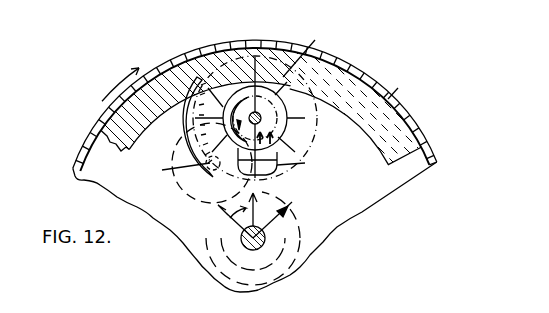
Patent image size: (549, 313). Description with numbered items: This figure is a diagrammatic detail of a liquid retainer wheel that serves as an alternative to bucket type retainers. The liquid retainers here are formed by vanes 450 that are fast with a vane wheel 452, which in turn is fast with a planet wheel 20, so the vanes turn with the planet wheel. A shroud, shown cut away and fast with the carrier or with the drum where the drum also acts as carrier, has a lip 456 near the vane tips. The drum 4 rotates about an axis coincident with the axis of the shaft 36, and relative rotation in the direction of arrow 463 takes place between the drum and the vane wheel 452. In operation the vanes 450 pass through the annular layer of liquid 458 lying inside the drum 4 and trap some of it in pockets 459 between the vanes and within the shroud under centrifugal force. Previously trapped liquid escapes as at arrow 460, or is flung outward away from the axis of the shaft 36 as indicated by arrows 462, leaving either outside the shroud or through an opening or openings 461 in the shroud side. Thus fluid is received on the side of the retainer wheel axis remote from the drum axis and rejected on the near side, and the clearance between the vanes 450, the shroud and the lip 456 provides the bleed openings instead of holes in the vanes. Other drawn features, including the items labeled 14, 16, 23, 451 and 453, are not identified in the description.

The drum 4 is at (400, 84).
The cam 14 is at (266, 238).
The gear 16 is at (190, 186).
The planet wheel 20 is at (230, 110).
The shaft 23 is at (262, 102).
The shaft 36 is at (266, 238).
The vanes 450 is at (218, 47).
The pitch circle 451 is at (234, 118).
The vane wheel 452 is at (313, 52).
The curved blade 453 is at (198, 90).
The lip 456 is at (343, 50).
The annular layer of liquid 458 is at (406, 115).
The pockets 459 is at (182, 160).
The arrow 460 is at (315, 162).
The openings 461 is at (277, 178).
The arrows 462 is at (292, 211).
The arrow 463 is at (240, 105).